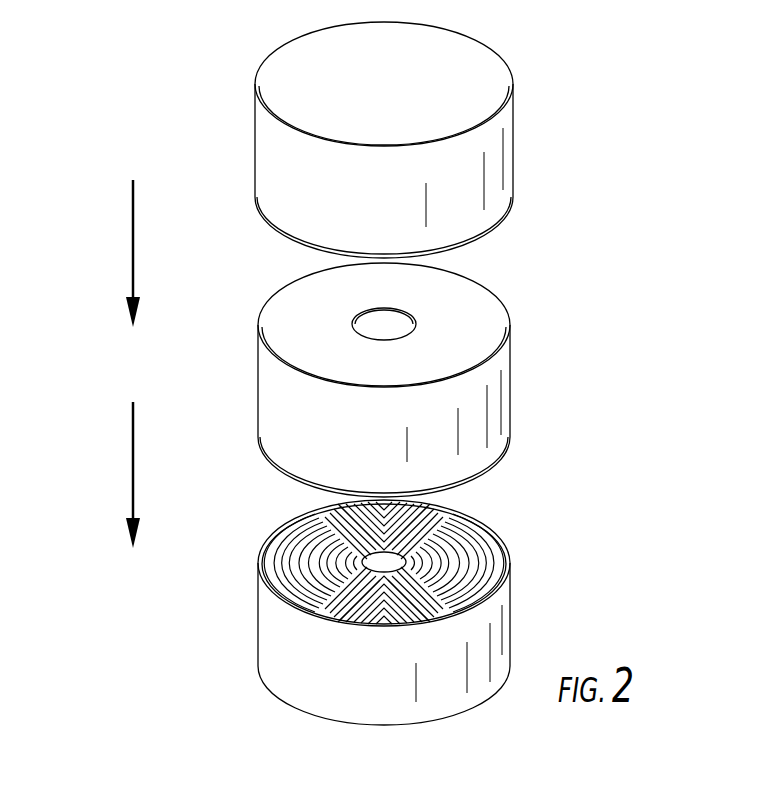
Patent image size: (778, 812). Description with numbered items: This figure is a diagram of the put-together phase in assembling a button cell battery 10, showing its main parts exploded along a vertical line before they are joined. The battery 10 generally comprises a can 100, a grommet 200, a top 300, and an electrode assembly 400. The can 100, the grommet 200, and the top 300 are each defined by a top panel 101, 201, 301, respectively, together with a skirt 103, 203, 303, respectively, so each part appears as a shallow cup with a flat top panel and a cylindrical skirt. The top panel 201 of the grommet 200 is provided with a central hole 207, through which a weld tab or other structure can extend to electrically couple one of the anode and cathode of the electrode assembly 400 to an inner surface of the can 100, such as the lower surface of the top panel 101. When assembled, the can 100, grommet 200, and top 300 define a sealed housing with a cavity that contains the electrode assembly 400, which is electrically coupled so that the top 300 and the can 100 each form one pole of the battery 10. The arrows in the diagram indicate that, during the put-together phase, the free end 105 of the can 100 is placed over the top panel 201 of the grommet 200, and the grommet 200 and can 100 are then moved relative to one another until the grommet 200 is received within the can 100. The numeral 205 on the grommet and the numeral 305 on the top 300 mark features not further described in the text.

The button cell battery 10 is at (136, 117).
The can 100 is at (539, 130).
The top panel 101 is at (448, 52).
The skirt 103 is at (266, 155).
The free end 105 is at (265, 213).
The grommet 200 is at (546, 360).
The top panel 201 is at (468, 308).
The skirt 203 is at (268, 405).
The bottom edge of second layer 205 is at (267, 452).
The central hole 207 is at (353, 321).
The top 300 is at (555, 622).
The top panel 301 is at (290, 702).
The skirt 303 is at (485, 658).
The top surface of third layer 305 is at (508, 566).
The electrode assembly 400 is at (236, 548).